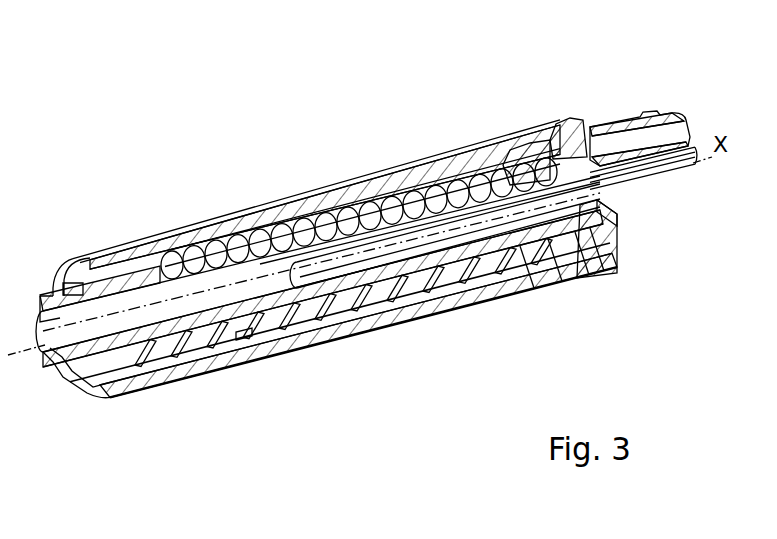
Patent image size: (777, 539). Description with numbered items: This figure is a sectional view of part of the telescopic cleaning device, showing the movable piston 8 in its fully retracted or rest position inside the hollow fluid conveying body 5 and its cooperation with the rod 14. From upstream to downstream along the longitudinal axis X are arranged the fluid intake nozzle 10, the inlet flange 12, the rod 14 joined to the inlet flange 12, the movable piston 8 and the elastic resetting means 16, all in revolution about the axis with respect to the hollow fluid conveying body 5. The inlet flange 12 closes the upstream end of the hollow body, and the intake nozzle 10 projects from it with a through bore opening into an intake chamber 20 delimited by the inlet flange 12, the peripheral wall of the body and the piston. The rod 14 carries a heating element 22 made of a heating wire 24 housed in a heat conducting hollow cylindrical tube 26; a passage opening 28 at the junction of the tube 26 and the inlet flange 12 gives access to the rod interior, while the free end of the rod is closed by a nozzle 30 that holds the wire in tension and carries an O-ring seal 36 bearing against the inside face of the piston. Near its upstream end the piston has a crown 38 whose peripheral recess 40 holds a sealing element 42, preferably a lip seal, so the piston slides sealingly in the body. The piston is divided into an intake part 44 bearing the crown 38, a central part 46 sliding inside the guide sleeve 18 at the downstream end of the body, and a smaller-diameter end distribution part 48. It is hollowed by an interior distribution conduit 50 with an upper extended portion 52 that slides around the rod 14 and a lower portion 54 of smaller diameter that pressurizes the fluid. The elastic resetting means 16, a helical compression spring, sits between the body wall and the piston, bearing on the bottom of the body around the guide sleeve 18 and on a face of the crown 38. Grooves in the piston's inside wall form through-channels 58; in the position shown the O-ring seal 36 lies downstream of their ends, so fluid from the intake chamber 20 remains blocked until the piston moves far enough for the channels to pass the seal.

The hollow fluid conveying body 5 is at (407, 168).
The movable piston 8 is at (425, 318).
The fluid intake nozzle 10 is at (652, 105).
The inlet flange 12 is at (620, 270).
The rod 14 is at (340, 327).
The elastic resetting means 16 is at (367, 335).
The guide sleeve 18 is at (192, 375).
The intake chamber 20 is at (555, 135).
The heating element 22 is at (495, 188).
The heating wire 24 is at (667, 183).
The heat conducting hollow cylindrical tube 26 is at (474, 325).
The passage opening 28 is at (612, 201).
The nozzle 30 is at (243, 335).
The O-ring seal 36 is at (270, 340).
The crown 38 is at (530, 282).
The peripheral recess 40 is at (552, 272).
The sealing element 42 is at (577, 268).
The intake part 44 is at (505, 295).
The central part 46 is at (305, 345).
The end distribution part 48 is at (85, 395).
The interior distribution conduit 50 is at (352, 107).
The upper extended portion 52 is at (355, 200).
The lower portion 54 is at (143, 234).
The through-channels 58 is at (445, 185).